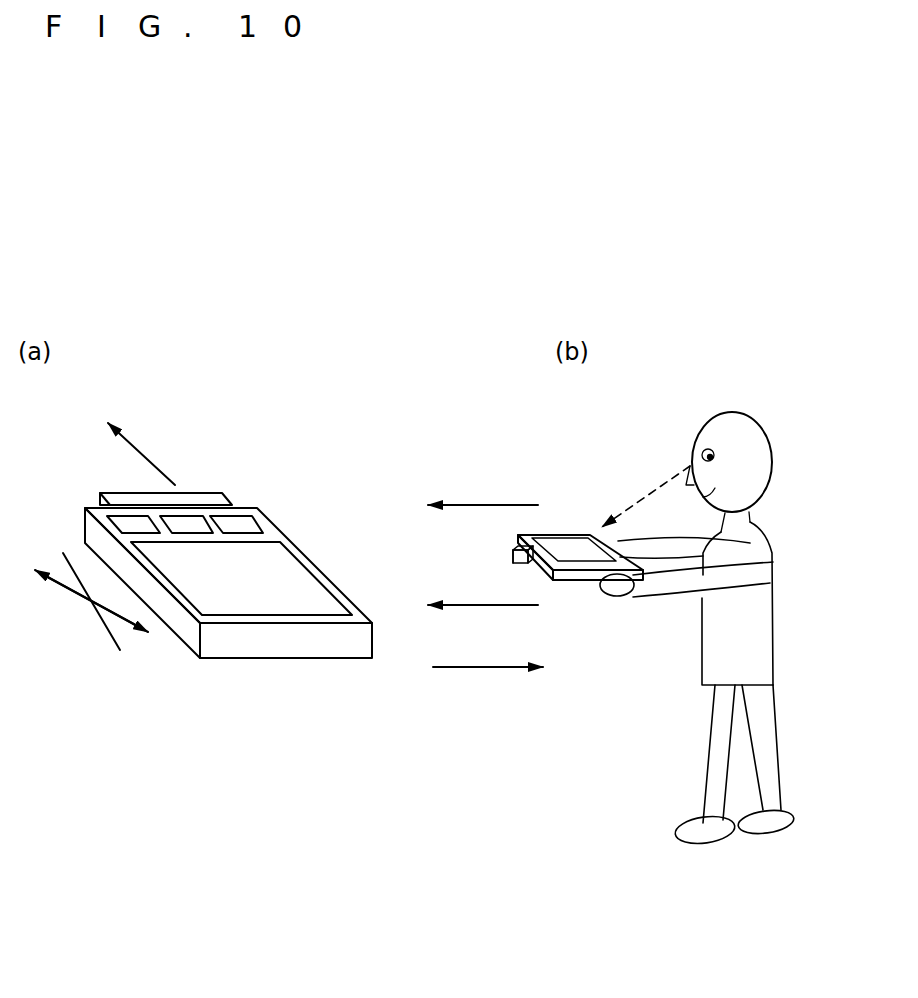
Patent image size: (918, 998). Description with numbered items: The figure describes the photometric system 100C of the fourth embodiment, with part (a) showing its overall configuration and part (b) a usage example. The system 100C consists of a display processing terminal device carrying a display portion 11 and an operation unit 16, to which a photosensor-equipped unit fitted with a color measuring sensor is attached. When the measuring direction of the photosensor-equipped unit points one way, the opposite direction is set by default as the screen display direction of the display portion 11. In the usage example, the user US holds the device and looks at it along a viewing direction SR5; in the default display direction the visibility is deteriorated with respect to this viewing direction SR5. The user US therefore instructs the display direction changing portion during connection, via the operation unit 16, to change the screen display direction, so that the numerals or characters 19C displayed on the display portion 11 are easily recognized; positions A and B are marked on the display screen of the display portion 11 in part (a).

The photometric system 100C is at (337, 395).
The display portion 11 is at (300, 587).
The operation unit 16 is at (233, 525).
The numerals or characters 19C is at (277, 688).
The position A is at (277, 670).
The position B is at (272, 670).
The viewing direction SR5 is at (643, 498).
The user US is at (768, 431).